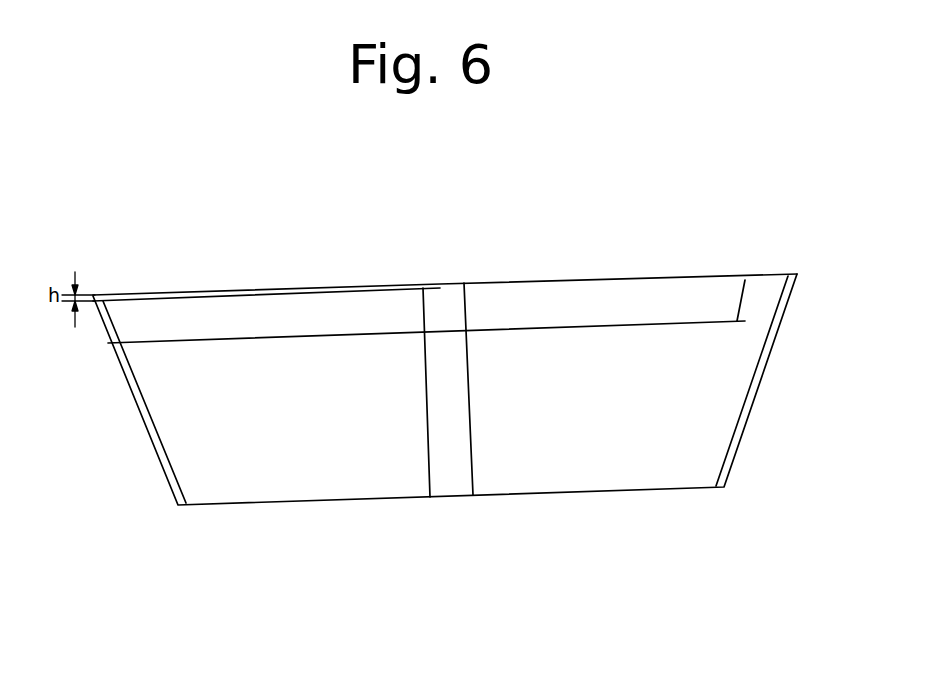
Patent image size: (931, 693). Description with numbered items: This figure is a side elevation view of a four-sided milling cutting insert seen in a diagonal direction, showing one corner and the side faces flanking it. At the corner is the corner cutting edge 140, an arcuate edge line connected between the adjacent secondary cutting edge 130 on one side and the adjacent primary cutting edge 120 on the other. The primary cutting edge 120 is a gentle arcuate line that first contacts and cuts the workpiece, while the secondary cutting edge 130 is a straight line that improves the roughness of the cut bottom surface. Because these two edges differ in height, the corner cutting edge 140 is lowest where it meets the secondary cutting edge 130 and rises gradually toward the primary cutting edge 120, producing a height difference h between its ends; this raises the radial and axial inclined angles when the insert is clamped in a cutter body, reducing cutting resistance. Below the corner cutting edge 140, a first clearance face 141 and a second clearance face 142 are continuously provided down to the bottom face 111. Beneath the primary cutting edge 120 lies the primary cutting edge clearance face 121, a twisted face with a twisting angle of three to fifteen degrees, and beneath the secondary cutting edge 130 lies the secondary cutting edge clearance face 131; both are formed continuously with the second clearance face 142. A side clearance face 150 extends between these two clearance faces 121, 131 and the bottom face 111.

The bottom face 111 is at (367, 498).
The primary cutting edge 120 is at (255, 295).
The primary cutting edge clearance face 121 is at (207, 317).
The secondary cutting edge 130 is at (397, 293).
The secondary cutting edge clearance face 131 is at (402, 309).
The corner cutting edge 140 is at (515, 367).
The first clearance face 141 is at (453, 408).
The second clearance face 142 is at (443, 310).
The side clearance face 150 is at (267, 445).